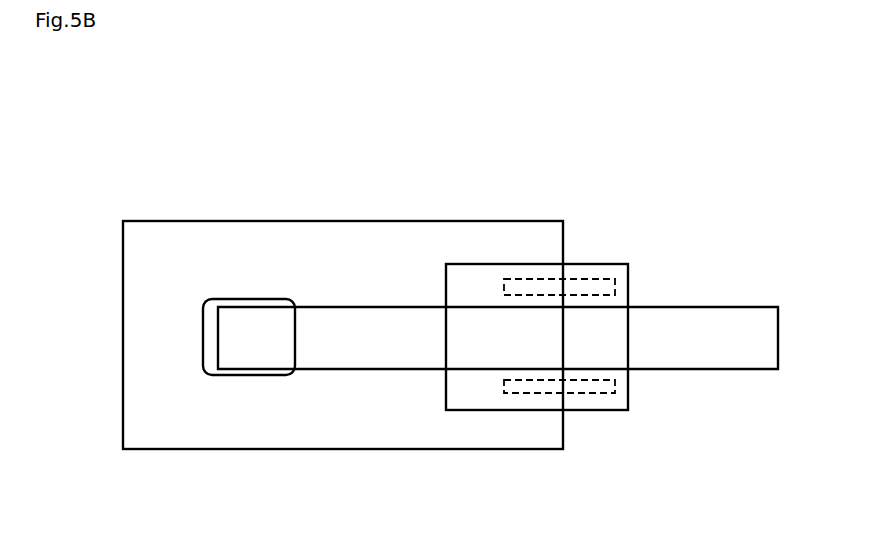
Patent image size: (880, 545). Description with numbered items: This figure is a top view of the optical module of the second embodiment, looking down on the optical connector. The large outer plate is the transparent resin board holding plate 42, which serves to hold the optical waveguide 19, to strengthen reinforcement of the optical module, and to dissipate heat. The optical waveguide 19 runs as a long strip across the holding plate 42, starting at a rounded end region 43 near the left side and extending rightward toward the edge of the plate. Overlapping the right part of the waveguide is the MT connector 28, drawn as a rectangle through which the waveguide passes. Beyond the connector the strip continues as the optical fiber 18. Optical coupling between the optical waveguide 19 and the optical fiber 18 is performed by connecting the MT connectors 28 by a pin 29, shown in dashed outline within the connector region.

The transparent resin board holding plate 42 is at (163, 247).
The pad portion 43 is at (215, 375).
The optical waveguide 19 is at (378, 307).
The optical fiber 18 is at (665, 358).
The MT connector 28 is at (587, 265).
The pin 29 is at (585, 394).